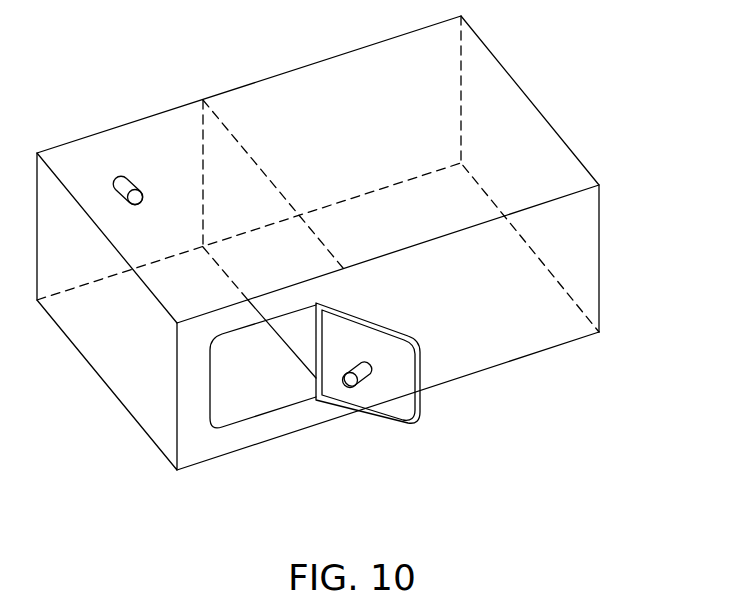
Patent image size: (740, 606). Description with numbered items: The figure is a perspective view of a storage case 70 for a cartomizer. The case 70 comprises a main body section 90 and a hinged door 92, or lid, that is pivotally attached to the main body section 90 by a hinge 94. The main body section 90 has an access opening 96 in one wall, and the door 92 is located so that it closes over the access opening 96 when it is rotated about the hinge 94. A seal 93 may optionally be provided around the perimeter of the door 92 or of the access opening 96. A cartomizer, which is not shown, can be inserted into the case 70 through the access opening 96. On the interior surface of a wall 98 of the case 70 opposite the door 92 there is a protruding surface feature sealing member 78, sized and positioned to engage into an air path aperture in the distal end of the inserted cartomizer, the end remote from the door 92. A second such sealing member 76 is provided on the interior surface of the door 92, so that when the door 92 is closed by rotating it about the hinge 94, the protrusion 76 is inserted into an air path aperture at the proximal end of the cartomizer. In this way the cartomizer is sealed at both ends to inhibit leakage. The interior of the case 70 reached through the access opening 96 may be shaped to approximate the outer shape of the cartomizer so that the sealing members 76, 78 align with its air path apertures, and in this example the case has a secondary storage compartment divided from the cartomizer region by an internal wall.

The case 70 is at (351, 259).
The sealing member 76 is at (353, 390).
The sealing member 78 is at (135, 182).
The main body section 90 is at (601, 263).
The hinged door 92 is at (429, 396).
The seal 93 is at (415, 367).
The hinge 94 is at (315, 362).
The access opening 96 is at (208, 395).
The wall 98 is at (72, 158).